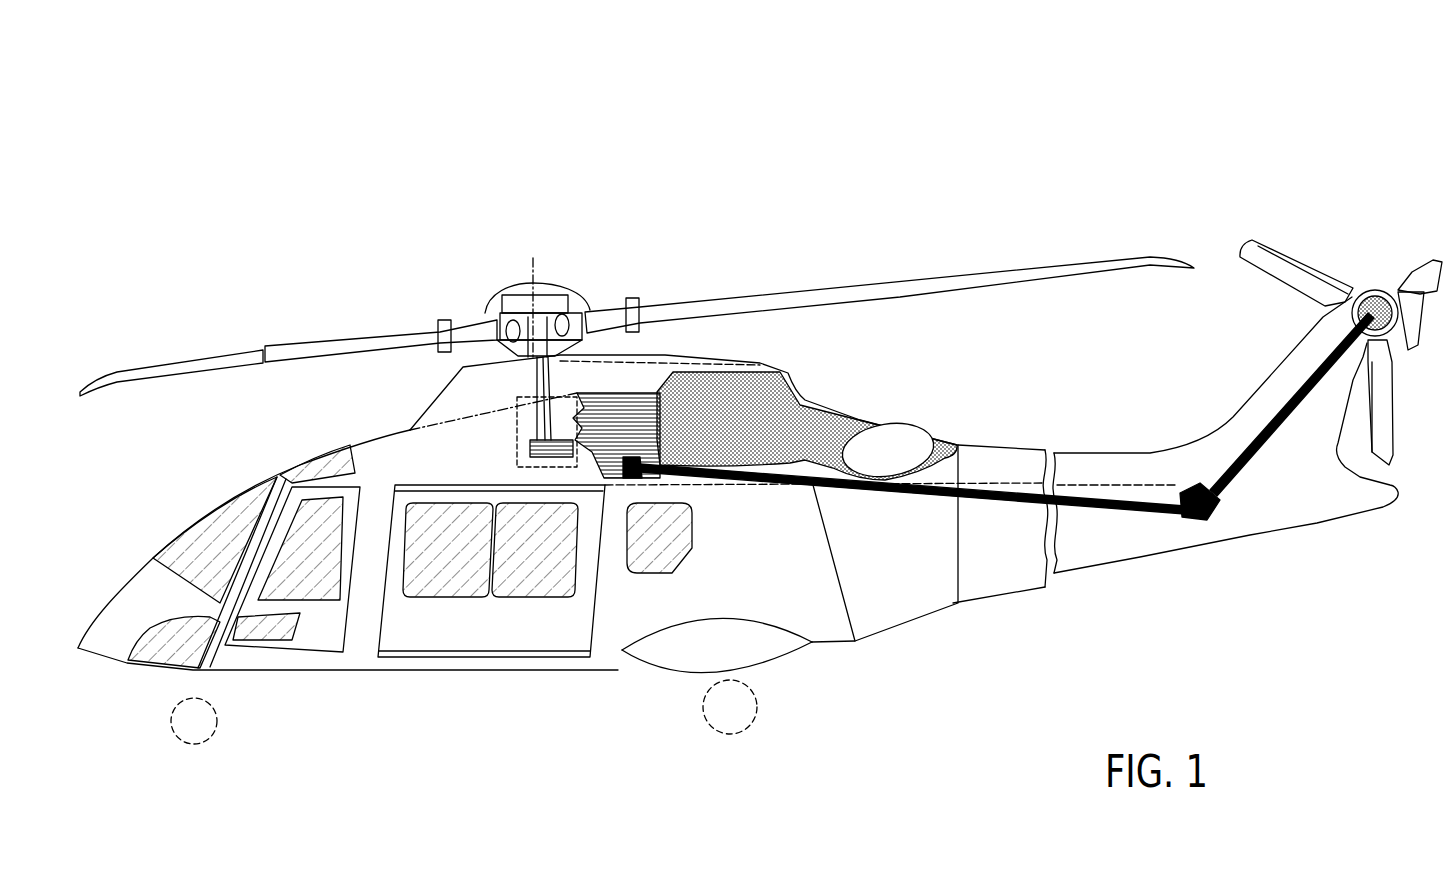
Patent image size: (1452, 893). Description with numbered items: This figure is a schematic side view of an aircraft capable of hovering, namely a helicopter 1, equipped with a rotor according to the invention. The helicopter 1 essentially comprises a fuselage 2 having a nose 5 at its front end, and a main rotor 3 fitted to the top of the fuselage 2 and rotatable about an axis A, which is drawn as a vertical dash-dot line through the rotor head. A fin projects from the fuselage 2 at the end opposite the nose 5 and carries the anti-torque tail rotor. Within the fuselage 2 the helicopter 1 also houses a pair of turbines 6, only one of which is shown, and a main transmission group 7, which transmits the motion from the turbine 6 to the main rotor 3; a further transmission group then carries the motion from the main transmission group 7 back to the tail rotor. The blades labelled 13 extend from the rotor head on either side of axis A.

The helicopter 1 is at (462, 281).
The fuselage 2 is at (612, 635).
The main rotor 3 is at (658, 264).
The nose 5 is at (148, 601).
The turbine 6 is at (733, 423).
The main transmission group 7 is at (510, 431).
The rotor blades 13 is at (298, 345).
The axis A is at (536, 268).